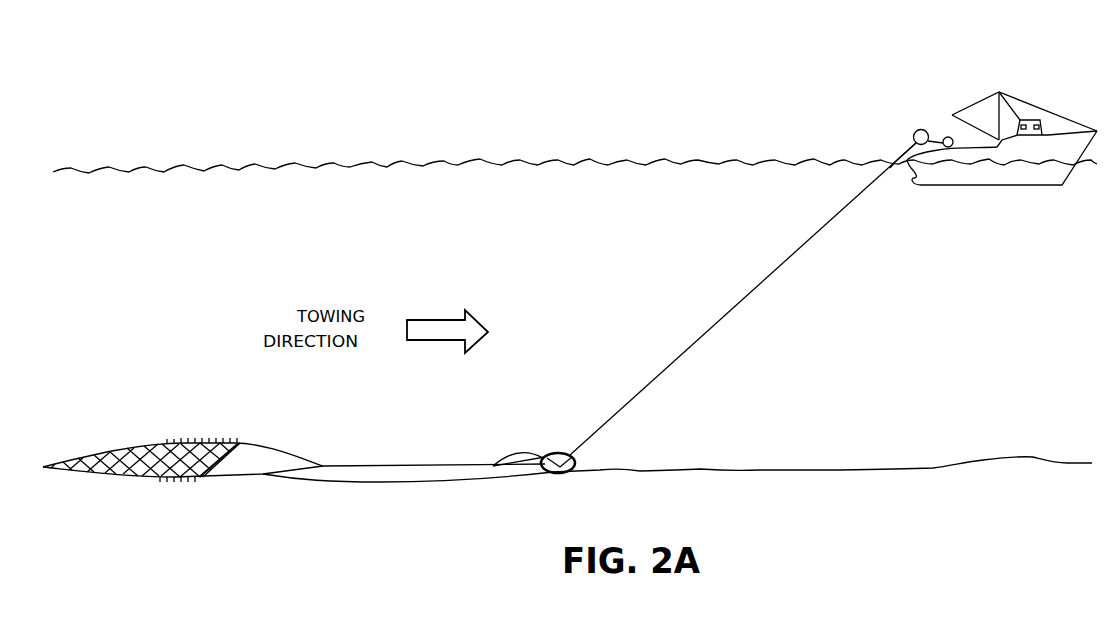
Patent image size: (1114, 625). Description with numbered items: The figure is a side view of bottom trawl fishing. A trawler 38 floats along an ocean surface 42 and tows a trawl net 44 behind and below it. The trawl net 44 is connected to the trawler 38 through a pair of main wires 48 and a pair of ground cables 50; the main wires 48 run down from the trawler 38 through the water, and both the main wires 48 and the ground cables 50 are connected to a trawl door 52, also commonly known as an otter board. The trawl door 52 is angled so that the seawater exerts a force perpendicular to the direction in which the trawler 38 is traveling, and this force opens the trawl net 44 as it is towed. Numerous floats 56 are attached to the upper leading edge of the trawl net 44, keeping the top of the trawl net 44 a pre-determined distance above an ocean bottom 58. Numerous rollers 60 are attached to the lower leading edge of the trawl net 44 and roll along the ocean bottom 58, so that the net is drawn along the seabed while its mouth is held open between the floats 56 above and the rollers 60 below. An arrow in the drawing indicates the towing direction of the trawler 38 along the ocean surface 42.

The trawler 38 is at (1058, 108).
The ocean surface 42 is at (495, 163).
The trawl net 44 is at (248, 442).
The main wires 48 is at (705, 334).
The ground cables 50 is at (445, 465).
The trawl door 52 is at (558, 474).
The floats 56 is at (187, 442).
The ocean bottom 58 is at (802, 473).
The rollers 60 is at (193, 477).